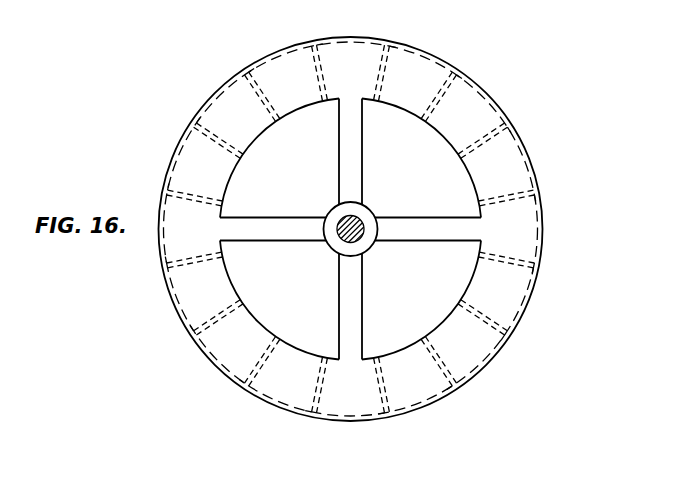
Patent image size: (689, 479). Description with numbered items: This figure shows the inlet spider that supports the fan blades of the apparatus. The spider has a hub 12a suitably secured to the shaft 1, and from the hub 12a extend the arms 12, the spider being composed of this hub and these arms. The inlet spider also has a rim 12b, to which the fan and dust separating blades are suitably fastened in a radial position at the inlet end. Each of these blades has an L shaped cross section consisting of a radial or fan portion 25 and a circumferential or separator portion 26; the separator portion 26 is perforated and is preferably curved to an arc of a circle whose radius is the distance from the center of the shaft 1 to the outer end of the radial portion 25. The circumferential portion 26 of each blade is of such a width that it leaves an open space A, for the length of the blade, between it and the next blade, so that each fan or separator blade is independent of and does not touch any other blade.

The shaft 1 is at (341, 236).
The arms 12 is at (370, 298).
The hub 12a is at (372, 211).
The rim 12b is at (366, 229).
The radial or fan portion 25 is at (480, 137).
The circumferential or separator portion 26 is at (527, 153).
The open space A is at (535, 190).